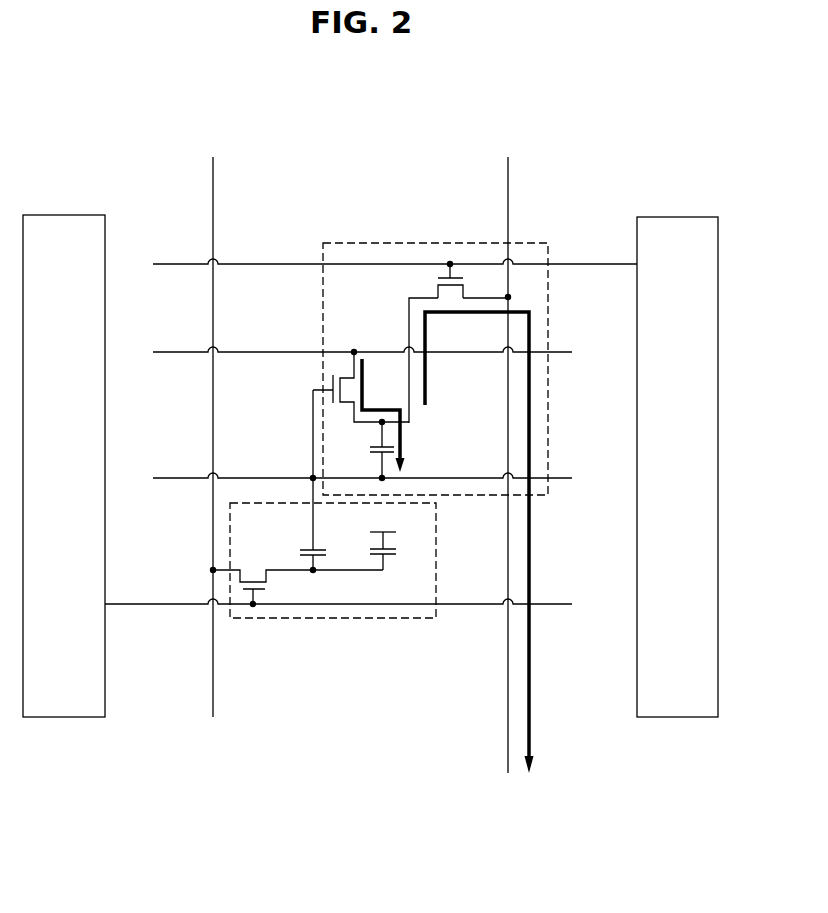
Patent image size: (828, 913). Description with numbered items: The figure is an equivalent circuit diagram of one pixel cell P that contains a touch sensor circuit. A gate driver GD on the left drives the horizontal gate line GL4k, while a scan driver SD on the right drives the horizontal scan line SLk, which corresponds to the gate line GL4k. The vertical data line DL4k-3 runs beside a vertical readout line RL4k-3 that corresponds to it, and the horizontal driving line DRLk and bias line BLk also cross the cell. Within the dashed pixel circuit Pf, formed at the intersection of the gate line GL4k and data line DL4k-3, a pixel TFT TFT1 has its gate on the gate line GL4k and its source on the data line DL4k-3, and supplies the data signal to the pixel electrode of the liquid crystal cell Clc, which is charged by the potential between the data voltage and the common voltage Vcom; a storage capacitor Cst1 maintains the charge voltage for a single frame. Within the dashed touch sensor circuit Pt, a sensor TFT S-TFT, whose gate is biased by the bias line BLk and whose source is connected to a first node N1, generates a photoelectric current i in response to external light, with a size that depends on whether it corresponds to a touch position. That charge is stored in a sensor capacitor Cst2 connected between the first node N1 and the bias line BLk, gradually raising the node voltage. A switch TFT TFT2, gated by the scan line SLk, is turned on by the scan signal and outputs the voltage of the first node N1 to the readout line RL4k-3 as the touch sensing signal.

The pixel cell P is at (151, 188).
The gate driver GD is at (65, 718).
The scan driver SD is at (680, 718).
The data line DL4k-3 is at (251, 437).
The readout line RL4k-3 is at (476, 465).
The scan line SLk is at (395, 251).
The driving line DRLk is at (362, 341).
The bias line BLk is at (362, 467).
The gate line GL4k is at (338, 592).
The touch sensor circuit Pt is at (548, 293).
The pixel circuit Pf is at (367, 622).
The switch TFT TFT2 is at (447, 342).
The sensor TFT S-TFT is at (337, 451).
The first node N1 is at (385, 405).
The photoelectric current i is at (383, 415).
The sensor capacitor Cst2 is at (410, 450).
The pixel TFT TFT1 is at (296, 585).
The storage capacitor Cst1 is at (295, 555).
The liquid crystal cell Clc is at (397, 551).
The common voltage Vcom is at (380, 520).